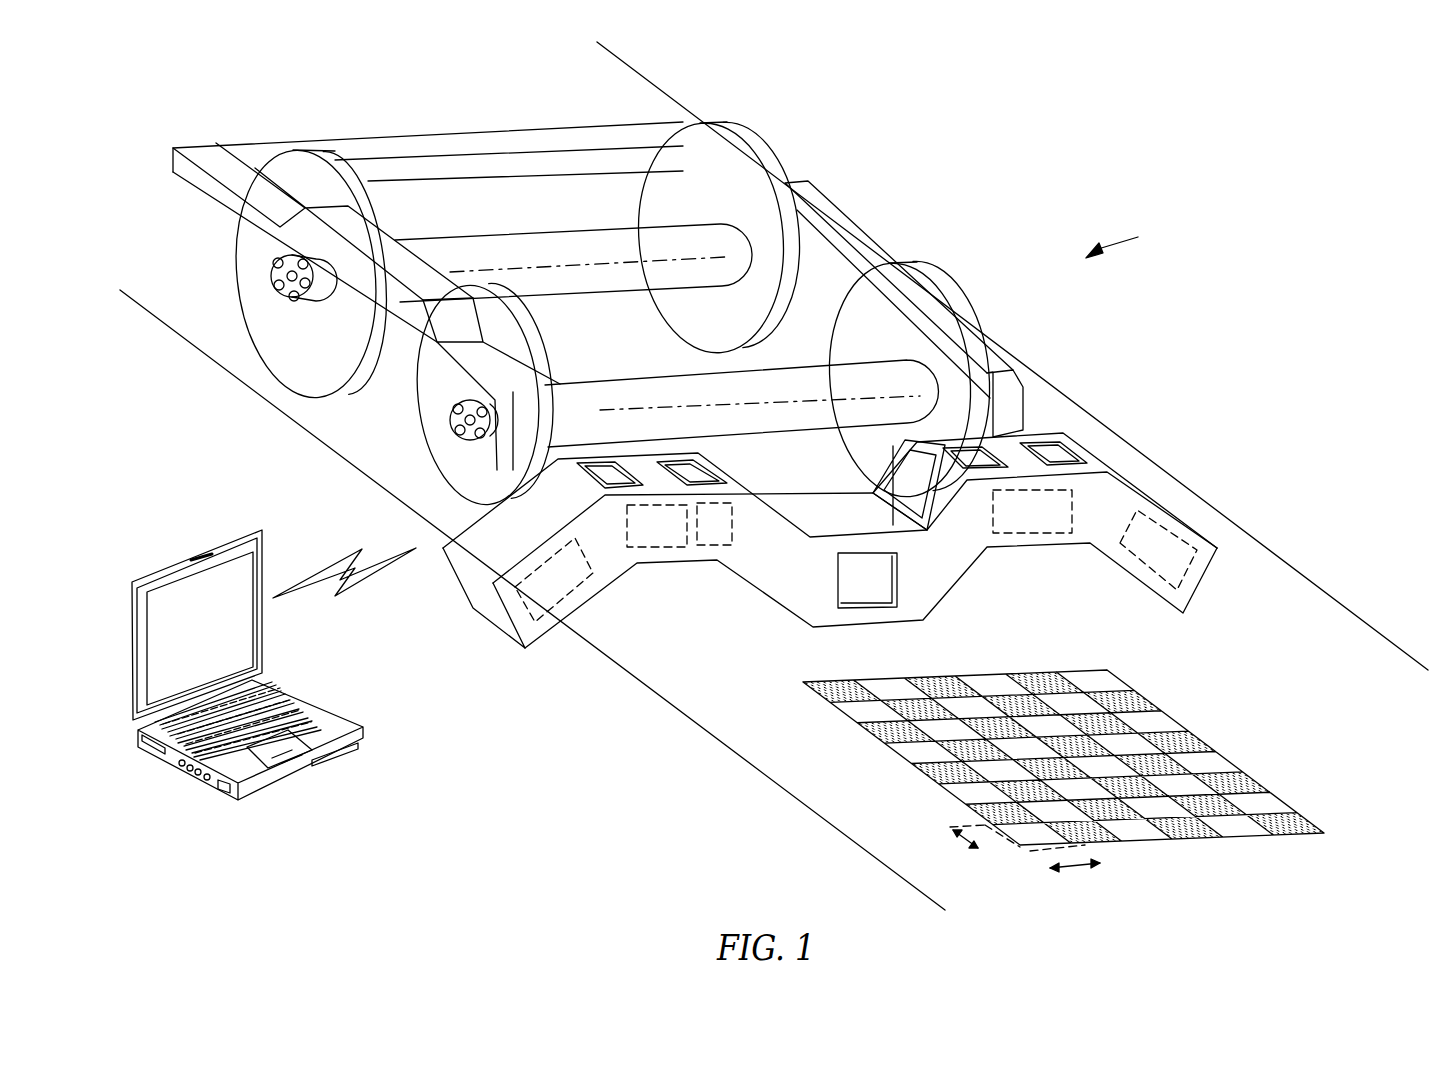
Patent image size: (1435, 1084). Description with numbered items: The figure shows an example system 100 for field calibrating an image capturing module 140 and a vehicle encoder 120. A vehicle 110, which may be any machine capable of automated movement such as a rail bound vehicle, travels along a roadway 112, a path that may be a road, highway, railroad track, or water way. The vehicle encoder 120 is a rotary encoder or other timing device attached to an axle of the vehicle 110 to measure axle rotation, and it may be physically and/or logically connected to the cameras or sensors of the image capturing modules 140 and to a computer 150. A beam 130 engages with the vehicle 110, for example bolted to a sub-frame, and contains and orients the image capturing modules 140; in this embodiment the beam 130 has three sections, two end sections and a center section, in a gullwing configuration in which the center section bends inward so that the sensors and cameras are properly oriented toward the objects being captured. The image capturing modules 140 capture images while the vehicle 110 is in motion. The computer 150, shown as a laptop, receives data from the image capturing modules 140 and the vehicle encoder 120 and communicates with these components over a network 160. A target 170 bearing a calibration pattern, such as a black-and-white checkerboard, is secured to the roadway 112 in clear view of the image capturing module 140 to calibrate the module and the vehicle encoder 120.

The system 100 is at (1170, 242).
The vehicle 110 is at (862, 208).
The roadway 112 is at (722, 712).
The vehicle encoder 120 is at (271, 277).
The beam 130 is at (1197, 522).
The image capturing module 140 is at (732, 530).
The computer 150 is at (267, 630).
The network 160 is at (312, 572).
The target 170 is at (1140, 716).